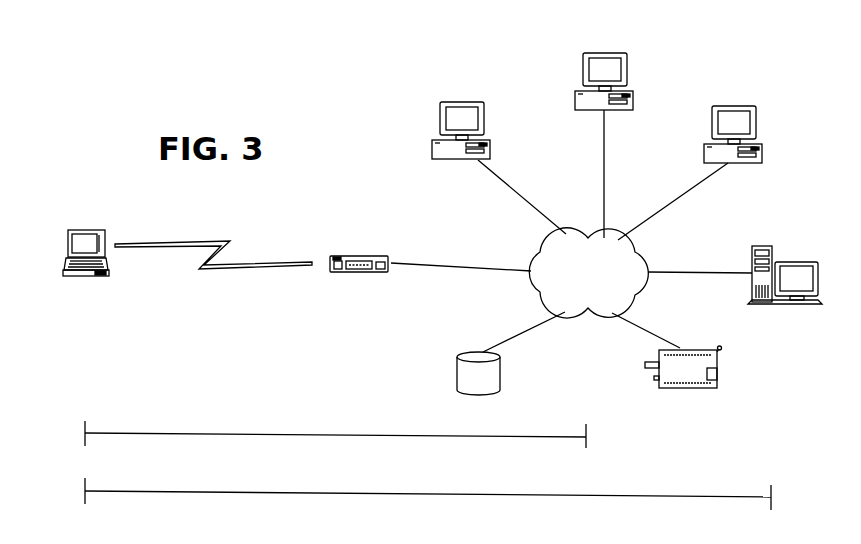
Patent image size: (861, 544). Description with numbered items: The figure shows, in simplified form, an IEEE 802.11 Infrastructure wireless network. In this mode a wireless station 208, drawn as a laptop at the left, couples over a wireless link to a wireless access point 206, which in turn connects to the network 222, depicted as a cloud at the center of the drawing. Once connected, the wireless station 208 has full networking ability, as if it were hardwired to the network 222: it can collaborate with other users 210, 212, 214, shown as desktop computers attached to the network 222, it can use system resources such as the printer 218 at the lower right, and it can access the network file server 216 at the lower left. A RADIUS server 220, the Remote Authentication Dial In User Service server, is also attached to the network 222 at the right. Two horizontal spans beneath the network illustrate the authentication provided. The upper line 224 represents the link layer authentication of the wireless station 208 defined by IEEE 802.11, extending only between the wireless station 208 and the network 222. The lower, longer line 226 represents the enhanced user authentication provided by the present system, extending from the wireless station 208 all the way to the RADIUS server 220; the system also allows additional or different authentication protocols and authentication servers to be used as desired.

The wireless access point 206 is at (361, 256).
The wireless station 208 is at (97, 231).
The user 210 is at (472, 103).
The user 212 is at (608, 54).
The user 214 is at (738, 107).
The network file server 216 is at (468, 350).
The printer 218 is at (708, 348).
The RADIUS server 220 is at (762, 247).
The network 222 is at (548, 249).
The link layer authentication line 224 is at (178, 432).
The enhanced user authentication line 226 is at (315, 490).